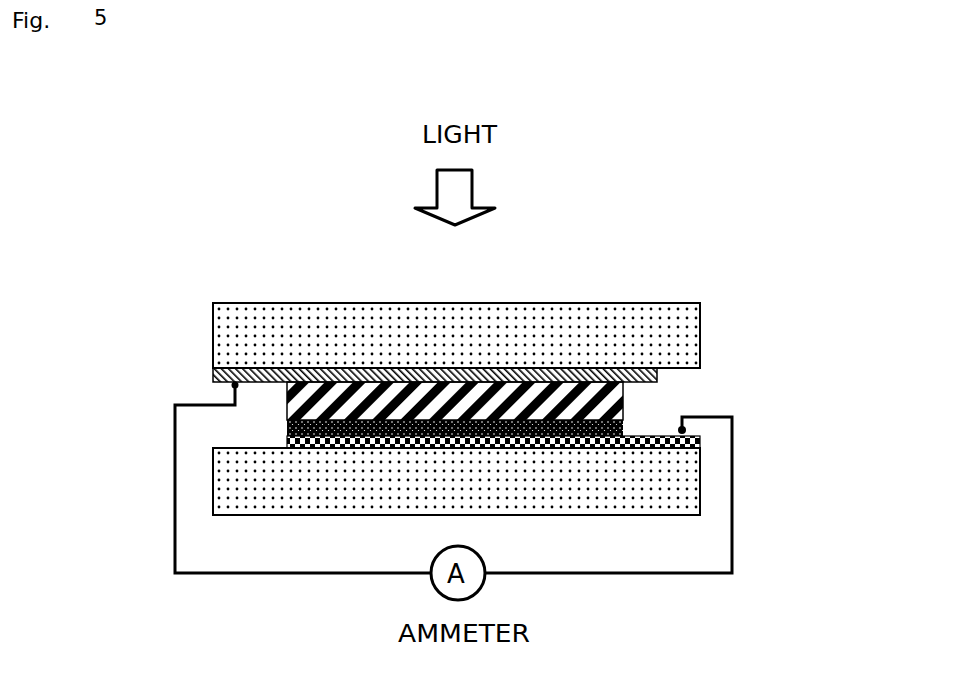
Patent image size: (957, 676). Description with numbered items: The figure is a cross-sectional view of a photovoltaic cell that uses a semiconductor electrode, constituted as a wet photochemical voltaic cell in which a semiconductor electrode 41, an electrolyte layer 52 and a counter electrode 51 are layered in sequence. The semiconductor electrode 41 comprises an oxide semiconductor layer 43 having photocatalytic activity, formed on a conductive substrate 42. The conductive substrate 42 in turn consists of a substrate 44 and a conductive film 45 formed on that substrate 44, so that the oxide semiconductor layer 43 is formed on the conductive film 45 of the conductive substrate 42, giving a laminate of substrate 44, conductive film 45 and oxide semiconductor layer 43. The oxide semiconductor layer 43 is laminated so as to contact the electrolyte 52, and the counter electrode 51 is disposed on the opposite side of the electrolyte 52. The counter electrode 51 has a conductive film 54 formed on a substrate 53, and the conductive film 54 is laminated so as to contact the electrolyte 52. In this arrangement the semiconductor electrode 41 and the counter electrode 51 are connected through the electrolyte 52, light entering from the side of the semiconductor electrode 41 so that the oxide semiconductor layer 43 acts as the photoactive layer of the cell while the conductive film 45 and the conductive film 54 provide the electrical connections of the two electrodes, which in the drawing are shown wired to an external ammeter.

The semiconductor electrode 41 is at (858, 295).
The conductive substrate 42 is at (800, 313).
The oxide semiconductor layer 43 is at (623, 407).
The substrate 44 is at (660, 318).
The conductive film 45 is at (657, 378).
The counter electrode 51 is at (808, 435).
The electrolyte layer 52 is at (287, 428).
The substrate 53 is at (620, 473).
The conductive film 54 is at (690, 445).